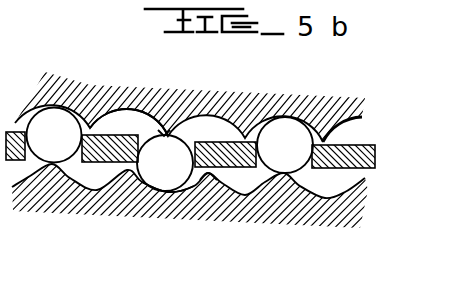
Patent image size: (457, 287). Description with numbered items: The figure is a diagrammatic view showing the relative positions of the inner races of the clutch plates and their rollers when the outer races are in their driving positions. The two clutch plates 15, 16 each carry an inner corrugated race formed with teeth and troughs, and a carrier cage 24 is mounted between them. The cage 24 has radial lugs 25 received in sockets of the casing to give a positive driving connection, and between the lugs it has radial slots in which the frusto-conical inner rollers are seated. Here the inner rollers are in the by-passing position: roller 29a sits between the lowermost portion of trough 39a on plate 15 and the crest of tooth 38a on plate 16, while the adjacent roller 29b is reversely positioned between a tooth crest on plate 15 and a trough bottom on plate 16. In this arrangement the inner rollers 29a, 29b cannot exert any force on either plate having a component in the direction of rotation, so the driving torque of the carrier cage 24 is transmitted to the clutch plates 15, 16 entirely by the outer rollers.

The clutch plate 15 is at (312, 218).
The clutch plate 16 is at (285, 110).
The carrier cage 24 is at (374, 165).
The radial lug 25 is at (134, 141).
The inner roller 29a is at (165, 163).
The inner roller 29b is at (53, 125).
The tooth 38a is at (210, 174).
The trough 39a is at (170, 194).